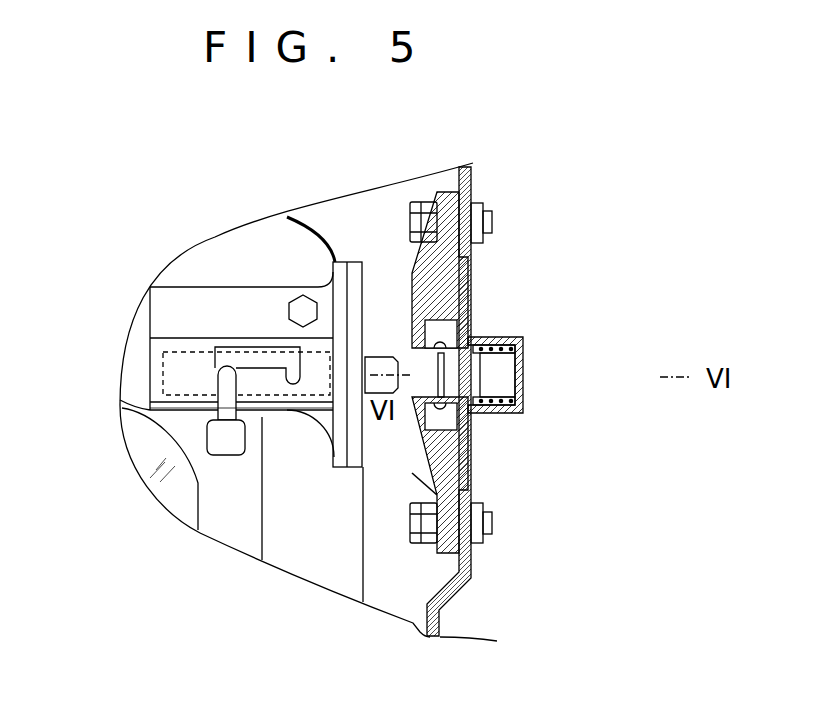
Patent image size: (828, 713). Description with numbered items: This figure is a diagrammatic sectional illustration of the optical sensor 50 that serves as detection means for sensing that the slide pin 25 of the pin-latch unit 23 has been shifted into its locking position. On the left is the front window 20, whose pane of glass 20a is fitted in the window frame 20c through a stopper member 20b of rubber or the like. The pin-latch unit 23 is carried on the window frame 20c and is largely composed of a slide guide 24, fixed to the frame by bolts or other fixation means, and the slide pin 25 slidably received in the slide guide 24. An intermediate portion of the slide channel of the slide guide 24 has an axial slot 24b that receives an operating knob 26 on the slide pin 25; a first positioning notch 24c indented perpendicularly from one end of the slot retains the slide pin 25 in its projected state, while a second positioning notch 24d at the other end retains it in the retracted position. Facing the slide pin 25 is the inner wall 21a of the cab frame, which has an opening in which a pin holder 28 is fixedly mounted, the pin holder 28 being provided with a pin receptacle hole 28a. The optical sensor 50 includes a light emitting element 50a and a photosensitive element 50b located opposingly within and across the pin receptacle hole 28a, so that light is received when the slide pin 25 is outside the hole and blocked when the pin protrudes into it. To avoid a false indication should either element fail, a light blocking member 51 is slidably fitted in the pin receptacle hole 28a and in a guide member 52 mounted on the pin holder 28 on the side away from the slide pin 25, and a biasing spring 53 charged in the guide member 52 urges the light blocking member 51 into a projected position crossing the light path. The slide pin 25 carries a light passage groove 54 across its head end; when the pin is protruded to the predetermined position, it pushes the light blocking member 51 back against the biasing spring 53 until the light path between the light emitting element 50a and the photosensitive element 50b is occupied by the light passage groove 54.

The front window 20 is at (372, 594).
The pane of glass 20a is at (163, 495).
The stopper member 20b is at (250, 545).
The window frame 20c is at (347, 573).
The inner wall 21a is at (471, 167).
The pin-latch unit 23 is at (282, 274).
The slide guide 24 is at (155, 370).
The axial slot 24b is at (240, 353).
The first positioning notch 24c is at (290, 410).
The second positioning notch 24d is at (222, 378).
The slide pin 25 is at (342, 258).
The operating knob 26 is at (198, 485).
The pin holder 28 is at (470, 284).
The pin receptacle hole 28a is at (407, 398).
The optical sensor 50 is at (615, 436).
The light emitting element 50a is at (473, 404).
The photosensitive element 50b is at (447, 427).
The light blocking member 51 is at (478, 370).
The guide member 52 is at (524, 390).
The biasing spring 53 is at (490, 338).
The light passage groove 54 is at (383, 400).